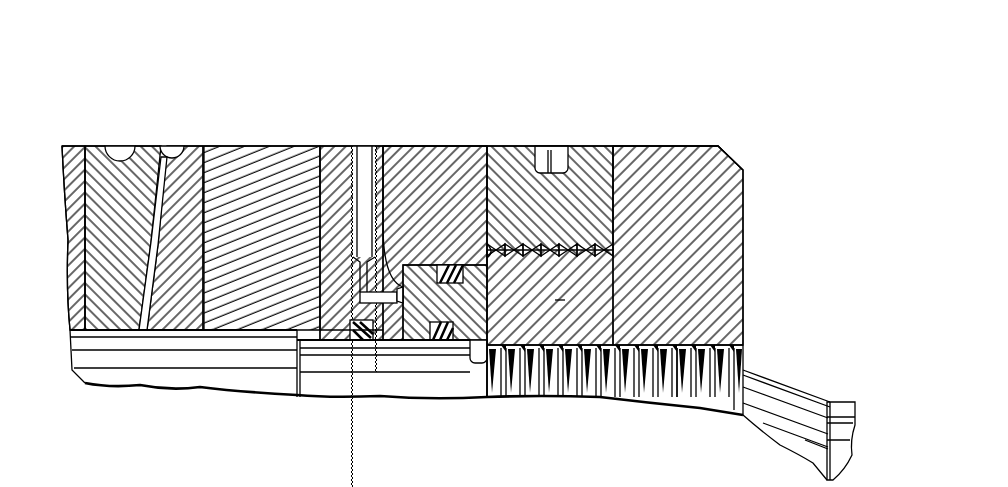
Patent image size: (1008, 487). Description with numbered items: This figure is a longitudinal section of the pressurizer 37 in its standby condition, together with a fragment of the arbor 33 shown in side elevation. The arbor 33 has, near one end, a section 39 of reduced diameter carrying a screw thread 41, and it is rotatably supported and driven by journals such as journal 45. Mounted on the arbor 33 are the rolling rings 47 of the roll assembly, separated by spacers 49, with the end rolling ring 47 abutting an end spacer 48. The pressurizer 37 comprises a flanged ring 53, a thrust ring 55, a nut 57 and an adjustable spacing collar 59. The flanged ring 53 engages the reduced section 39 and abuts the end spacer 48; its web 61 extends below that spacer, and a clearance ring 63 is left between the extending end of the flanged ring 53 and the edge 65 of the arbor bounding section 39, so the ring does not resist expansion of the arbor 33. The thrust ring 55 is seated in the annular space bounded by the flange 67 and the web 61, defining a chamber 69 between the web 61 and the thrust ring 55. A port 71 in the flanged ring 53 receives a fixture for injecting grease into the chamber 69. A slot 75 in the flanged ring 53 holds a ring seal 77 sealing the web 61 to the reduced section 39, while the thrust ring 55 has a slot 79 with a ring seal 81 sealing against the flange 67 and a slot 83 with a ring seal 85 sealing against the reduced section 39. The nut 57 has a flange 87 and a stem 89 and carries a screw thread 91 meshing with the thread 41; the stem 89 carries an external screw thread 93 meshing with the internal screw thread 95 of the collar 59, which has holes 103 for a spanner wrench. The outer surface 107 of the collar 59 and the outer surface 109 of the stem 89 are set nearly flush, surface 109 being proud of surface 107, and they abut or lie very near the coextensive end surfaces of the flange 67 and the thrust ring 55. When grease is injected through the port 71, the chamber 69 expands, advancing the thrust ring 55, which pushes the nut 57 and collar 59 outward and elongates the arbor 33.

The pressurizer 37 is at (705, 72).
The arbor 33 is at (397, 383).
The section of reduced diameter 39 is at (425, 387).
The screw thread 41 is at (683, 388).
The journal 45 is at (800, 390).
The rolling ring 47 is at (145, 146).
The end spacer 48 is at (248, 156).
The spacer 49 is at (73, 146).
The flanged ring 53 is at (441, 146).
The thrust ring 55 is at (470, 265).
The nut 57 is at (649, 206).
The adjustable spacing collar 59 is at (580, 150).
The web 61 is at (390, 341).
The clearance ring 63 is at (300, 337).
The edge of the arbor 65 is at (313, 397).
The flange 67 is at (425, 150).
The chamber 69 is at (362, 153).
The port 71 is at (322, 146).
The slot 75 is at (329, 386).
The ring seal 77 is at (353, 340).
The slot 79 is at (485, 159).
The ring seal 81 is at (453, 265).
The slot 83 is at (463, 382).
The ring seal 85 is at (447, 340).
The flange 87 is at (693, 146).
The stem 89 is at (560, 305).
The screw thread 91 is at (690, 340).
The external screw thread 93 is at (581, 146).
The internal screw thread 95 is at (582, 250).
The holes 103 is at (553, 160).
The outer surface 107 is at (487, 244).
The outer surface 109 is at (517, 386).